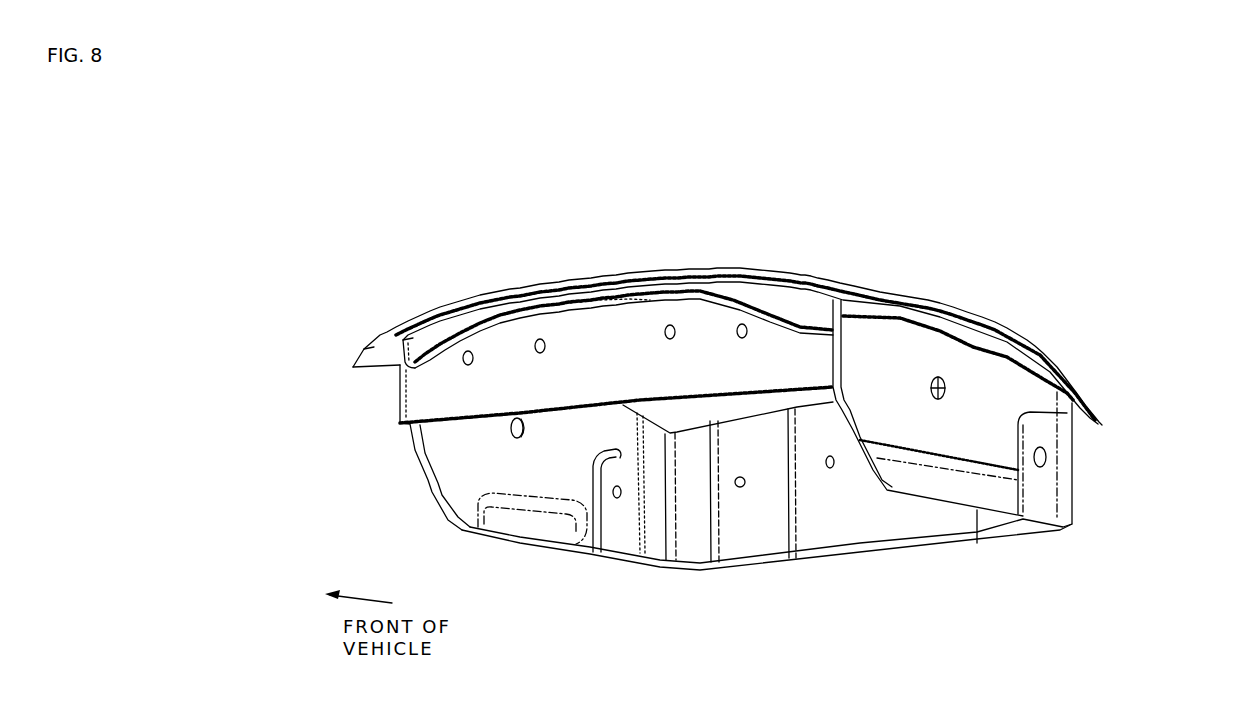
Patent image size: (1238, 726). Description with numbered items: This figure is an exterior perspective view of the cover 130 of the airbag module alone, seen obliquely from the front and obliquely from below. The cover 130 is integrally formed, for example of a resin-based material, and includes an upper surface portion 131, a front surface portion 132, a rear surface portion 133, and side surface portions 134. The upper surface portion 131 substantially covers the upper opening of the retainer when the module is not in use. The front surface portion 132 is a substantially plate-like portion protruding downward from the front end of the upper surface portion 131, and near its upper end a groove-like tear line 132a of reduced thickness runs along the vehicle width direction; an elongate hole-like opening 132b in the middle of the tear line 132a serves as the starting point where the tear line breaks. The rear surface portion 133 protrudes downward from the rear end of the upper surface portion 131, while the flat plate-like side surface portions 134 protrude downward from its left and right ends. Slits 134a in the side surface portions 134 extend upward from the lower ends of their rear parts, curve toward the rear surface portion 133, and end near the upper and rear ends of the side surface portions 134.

The cover 130 is at (384, 270).
The upper surface portion 131 is at (818, 278).
The front surface portion 132 is at (411, 397).
The tear line 132a is at (525, 318).
The opening 132b is at (611, 300).
The rear surface portion 133 is at (826, 519).
The side surface portions 134 is at (991, 385).
The slits 134a is at (1021, 438).